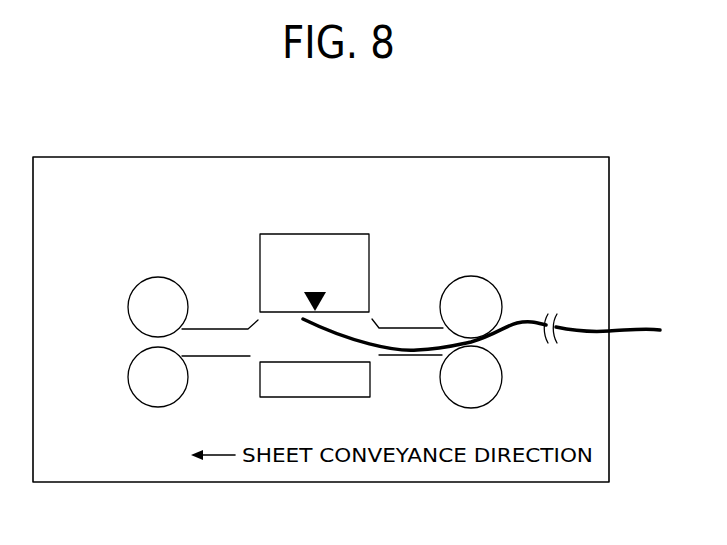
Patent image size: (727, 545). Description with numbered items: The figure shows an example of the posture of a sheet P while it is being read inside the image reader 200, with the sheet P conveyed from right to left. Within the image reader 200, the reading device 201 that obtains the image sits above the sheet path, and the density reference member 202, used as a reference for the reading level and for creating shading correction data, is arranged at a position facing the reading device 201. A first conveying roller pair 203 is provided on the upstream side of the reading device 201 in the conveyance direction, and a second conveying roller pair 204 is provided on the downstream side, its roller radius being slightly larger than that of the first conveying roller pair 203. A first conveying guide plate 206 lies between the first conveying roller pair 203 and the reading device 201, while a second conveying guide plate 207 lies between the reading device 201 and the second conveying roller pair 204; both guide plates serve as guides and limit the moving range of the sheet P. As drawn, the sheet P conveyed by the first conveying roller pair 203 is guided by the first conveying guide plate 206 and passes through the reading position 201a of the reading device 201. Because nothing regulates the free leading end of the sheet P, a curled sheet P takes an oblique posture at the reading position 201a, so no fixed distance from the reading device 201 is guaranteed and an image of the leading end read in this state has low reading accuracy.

The image reader 200 is at (571, 147).
The reading device 201 is at (312, 233).
The reading position 201a is at (318, 293).
The density reference member 202 is at (343, 397).
The first conveying roller pair 203 is at (470, 276).
The second conveying roller pair 204 is at (158, 277).
The first conveying guide plate 206 is at (405, 327).
The second conveying guide plate 207 is at (219, 327).
The sheet P is at (648, 328).